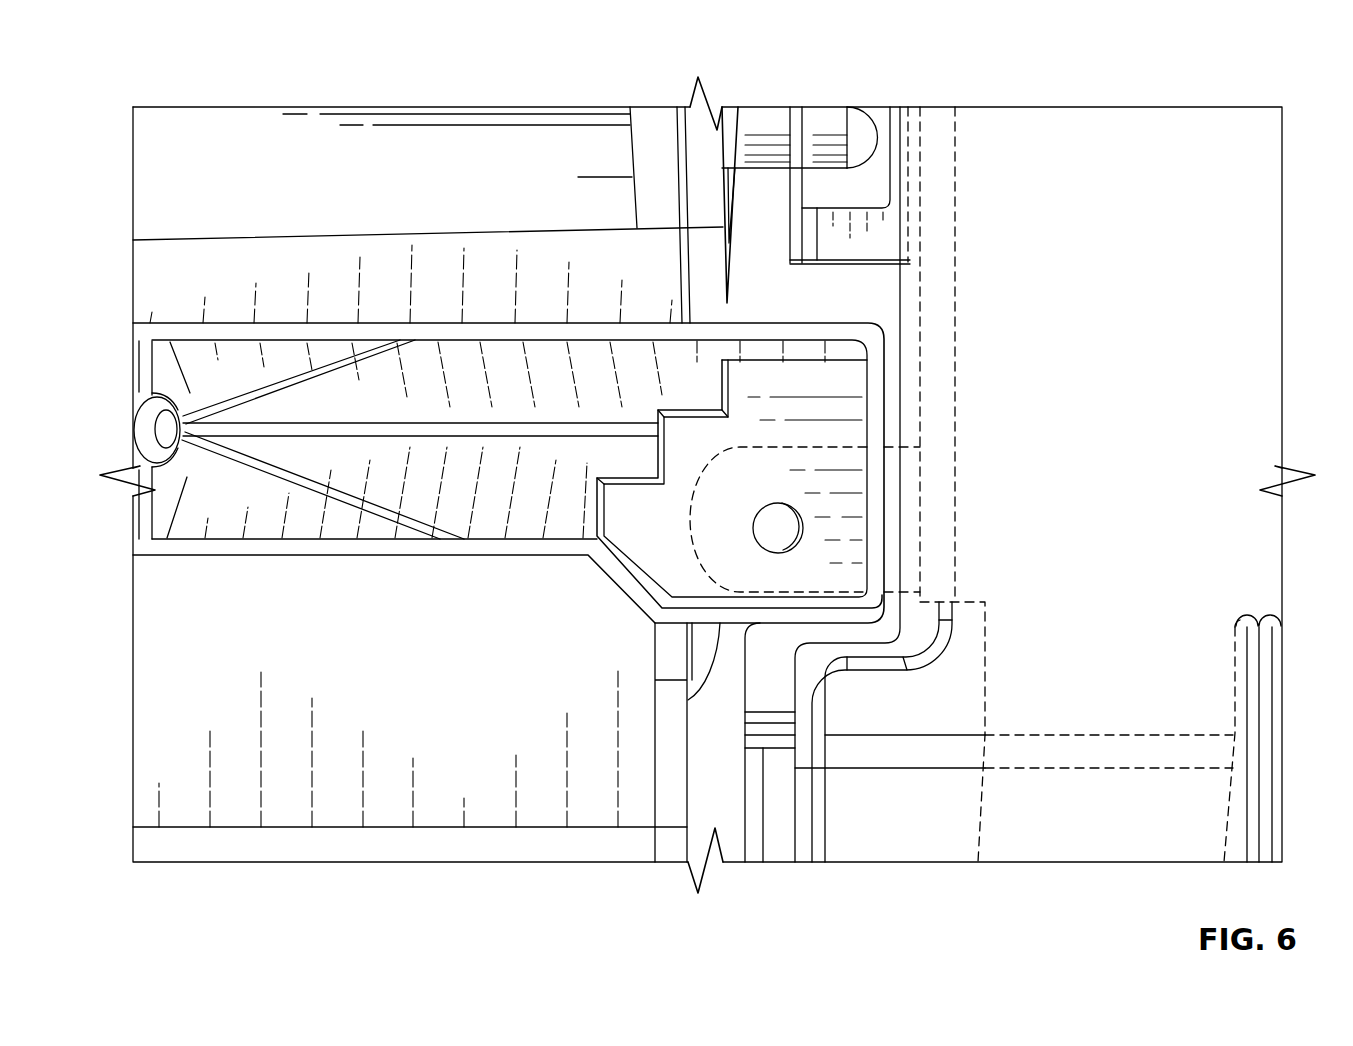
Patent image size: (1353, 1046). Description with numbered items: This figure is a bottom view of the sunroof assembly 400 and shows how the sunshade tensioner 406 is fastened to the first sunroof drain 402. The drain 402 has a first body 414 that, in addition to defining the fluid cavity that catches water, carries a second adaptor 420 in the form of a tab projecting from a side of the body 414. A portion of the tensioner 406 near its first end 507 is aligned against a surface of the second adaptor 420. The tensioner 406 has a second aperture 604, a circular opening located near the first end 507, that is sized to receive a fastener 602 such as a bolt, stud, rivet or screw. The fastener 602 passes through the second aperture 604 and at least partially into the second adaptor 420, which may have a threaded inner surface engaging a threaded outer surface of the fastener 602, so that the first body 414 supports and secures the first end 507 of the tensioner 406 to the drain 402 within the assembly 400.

The assembly 400 is at (133, 107).
The first sunroof drain 402 is at (737, 762).
The sunshade tensioner 406 is at (755, 323).
The first body 414 is at (1105, 389).
The second adaptor 420 is at (697, 495).
The first end 507 is at (887, 493).
The fastener 602 is at (760, 505).
The second aperture 604 is at (778, 556).